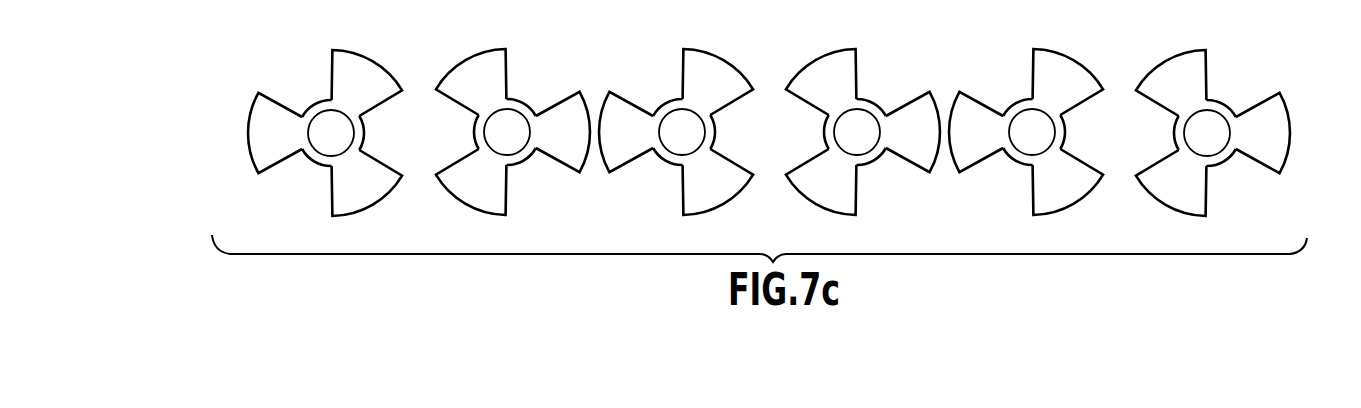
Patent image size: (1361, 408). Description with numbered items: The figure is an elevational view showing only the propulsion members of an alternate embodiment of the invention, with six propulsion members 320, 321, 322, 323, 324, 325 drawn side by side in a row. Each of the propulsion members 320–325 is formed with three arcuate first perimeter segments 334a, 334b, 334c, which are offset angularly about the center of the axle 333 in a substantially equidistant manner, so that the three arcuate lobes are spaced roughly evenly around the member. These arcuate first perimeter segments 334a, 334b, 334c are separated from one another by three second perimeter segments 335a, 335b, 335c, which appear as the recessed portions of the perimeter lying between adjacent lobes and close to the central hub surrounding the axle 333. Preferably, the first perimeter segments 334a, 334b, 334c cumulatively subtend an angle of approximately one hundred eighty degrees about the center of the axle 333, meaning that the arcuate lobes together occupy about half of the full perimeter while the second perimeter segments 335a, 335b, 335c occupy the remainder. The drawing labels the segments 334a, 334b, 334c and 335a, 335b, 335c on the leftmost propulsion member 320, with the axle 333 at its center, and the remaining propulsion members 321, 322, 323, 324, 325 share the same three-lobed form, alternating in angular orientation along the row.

The propulsion member 320 is at (336, 129).
The propulsion member 321 is at (497, 72).
The propulsion member 322 is at (708, 70).
The propulsion member 323 is at (843, 58).
The propulsion member 324 is at (1070, 62).
The propulsion member 325 is at (1197, 70).
The axle 333 is at (320, 133).
The first perimeter segment 334a is at (247, 128).
The first perimeter segment 334b is at (388, 72).
The first perimeter segment 334c is at (378, 207).
The second perimeter segment 335a is at (292, 160).
The second perimeter segment 335b is at (308, 100).
The second perimeter segment 335c is at (365, 133).